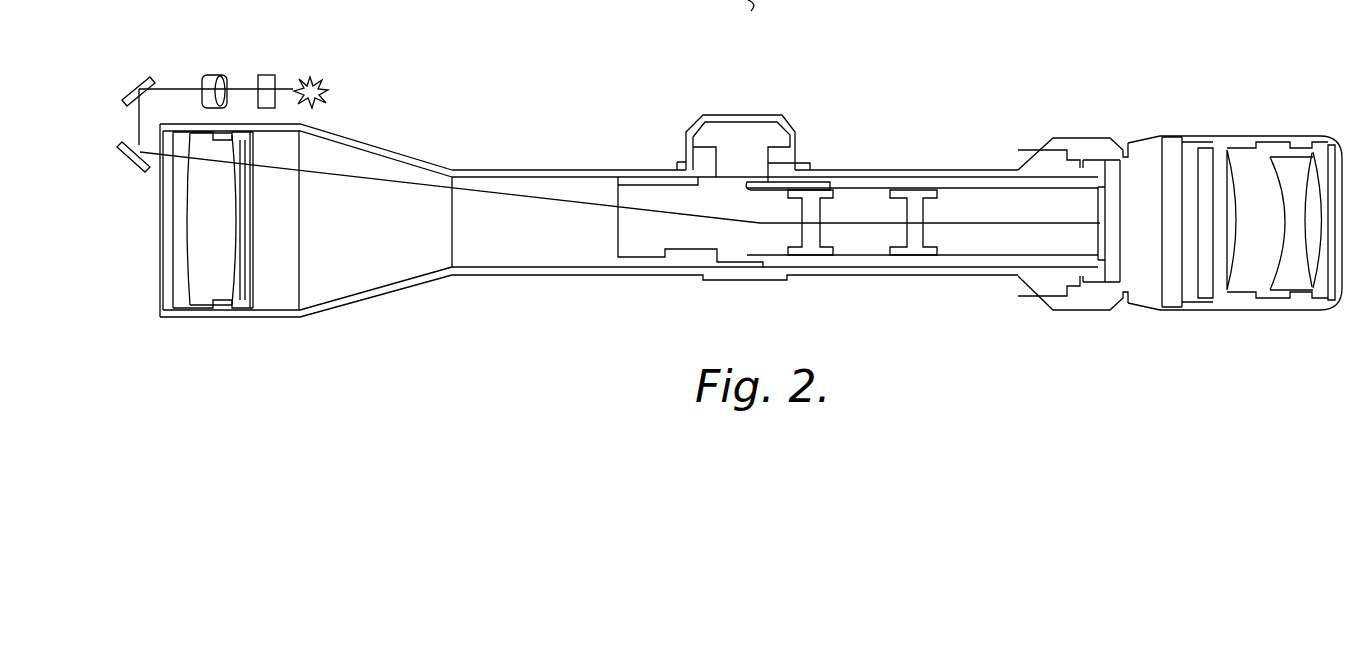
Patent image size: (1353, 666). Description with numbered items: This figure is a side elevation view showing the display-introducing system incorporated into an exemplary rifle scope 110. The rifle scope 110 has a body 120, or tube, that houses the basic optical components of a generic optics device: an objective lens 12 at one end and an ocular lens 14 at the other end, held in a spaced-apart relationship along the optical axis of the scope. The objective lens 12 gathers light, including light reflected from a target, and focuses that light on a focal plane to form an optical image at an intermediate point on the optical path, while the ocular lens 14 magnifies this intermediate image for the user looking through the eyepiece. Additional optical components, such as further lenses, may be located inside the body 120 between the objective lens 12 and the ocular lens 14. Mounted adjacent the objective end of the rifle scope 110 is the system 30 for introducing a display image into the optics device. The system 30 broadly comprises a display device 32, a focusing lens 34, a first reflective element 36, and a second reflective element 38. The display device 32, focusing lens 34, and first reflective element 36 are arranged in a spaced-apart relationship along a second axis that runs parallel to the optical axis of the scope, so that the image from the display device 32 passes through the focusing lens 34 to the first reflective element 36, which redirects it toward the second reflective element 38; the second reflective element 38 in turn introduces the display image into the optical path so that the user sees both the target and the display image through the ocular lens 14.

The objective lens 12 is at (212, 285).
The ocular lens 14 is at (1317, 278).
The system 30 is at (118, 82).
The display device 32 is at (327, 50).
The focusing lens 34 is at (212, 82).
The first reflective element 36 is at (145, 70).
The second reflective element 38 is at (133, 150).
The rifle scope 110 is at (957, 108).
The body 120 is at (392, 290).